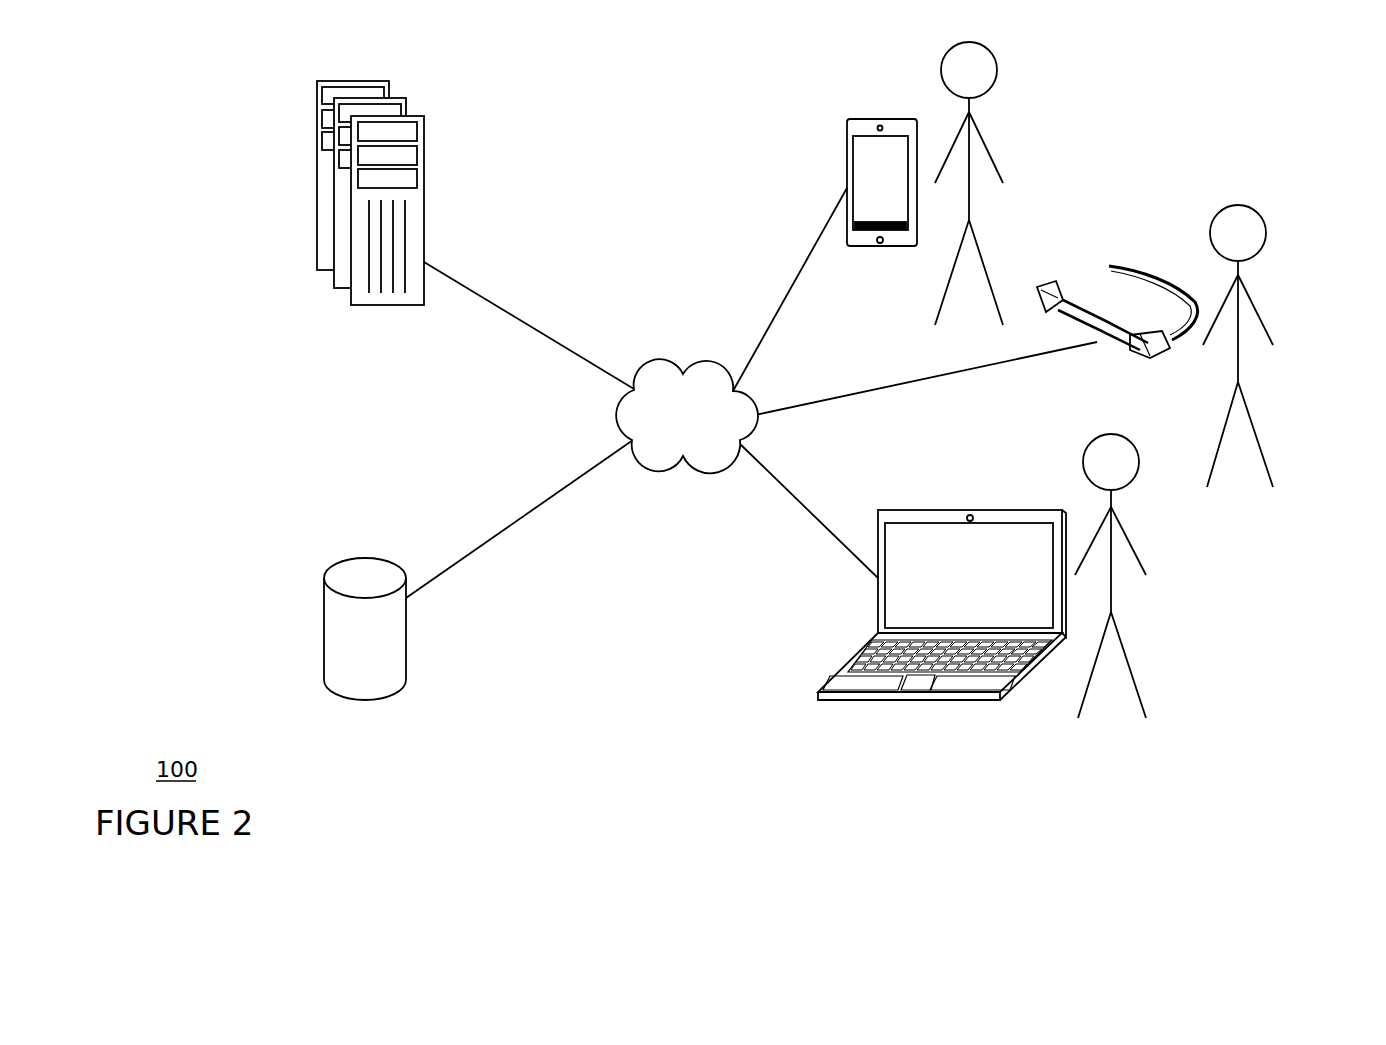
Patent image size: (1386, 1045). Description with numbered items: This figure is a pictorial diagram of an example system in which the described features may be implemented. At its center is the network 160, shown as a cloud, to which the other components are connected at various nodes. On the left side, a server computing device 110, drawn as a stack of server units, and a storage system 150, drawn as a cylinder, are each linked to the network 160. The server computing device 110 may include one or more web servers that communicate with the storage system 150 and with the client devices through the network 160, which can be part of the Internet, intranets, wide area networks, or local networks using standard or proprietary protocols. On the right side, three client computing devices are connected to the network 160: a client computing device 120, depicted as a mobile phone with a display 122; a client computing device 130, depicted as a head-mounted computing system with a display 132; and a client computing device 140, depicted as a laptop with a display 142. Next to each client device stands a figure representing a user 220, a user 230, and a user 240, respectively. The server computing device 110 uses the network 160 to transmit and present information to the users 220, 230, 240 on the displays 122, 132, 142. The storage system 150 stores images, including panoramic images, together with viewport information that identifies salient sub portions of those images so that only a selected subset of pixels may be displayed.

The computing device 110 is at (424, 158).
The client computing device 120 is at (826, 182).
The display 122 is at (847, 184).
The client computing device 130 is at (1117, 305).
The display 132 is at (1152, 360).
The client computing device 140 is at (917, 605).
The display 142 is at (885, 618).
The storage system 150 is at (407, 648).
The network 160 is at (751, 393).
The user 220 is at (1002, 175).
The user 230 is at (1270, 335).
The user 240 is at (1146, 565).